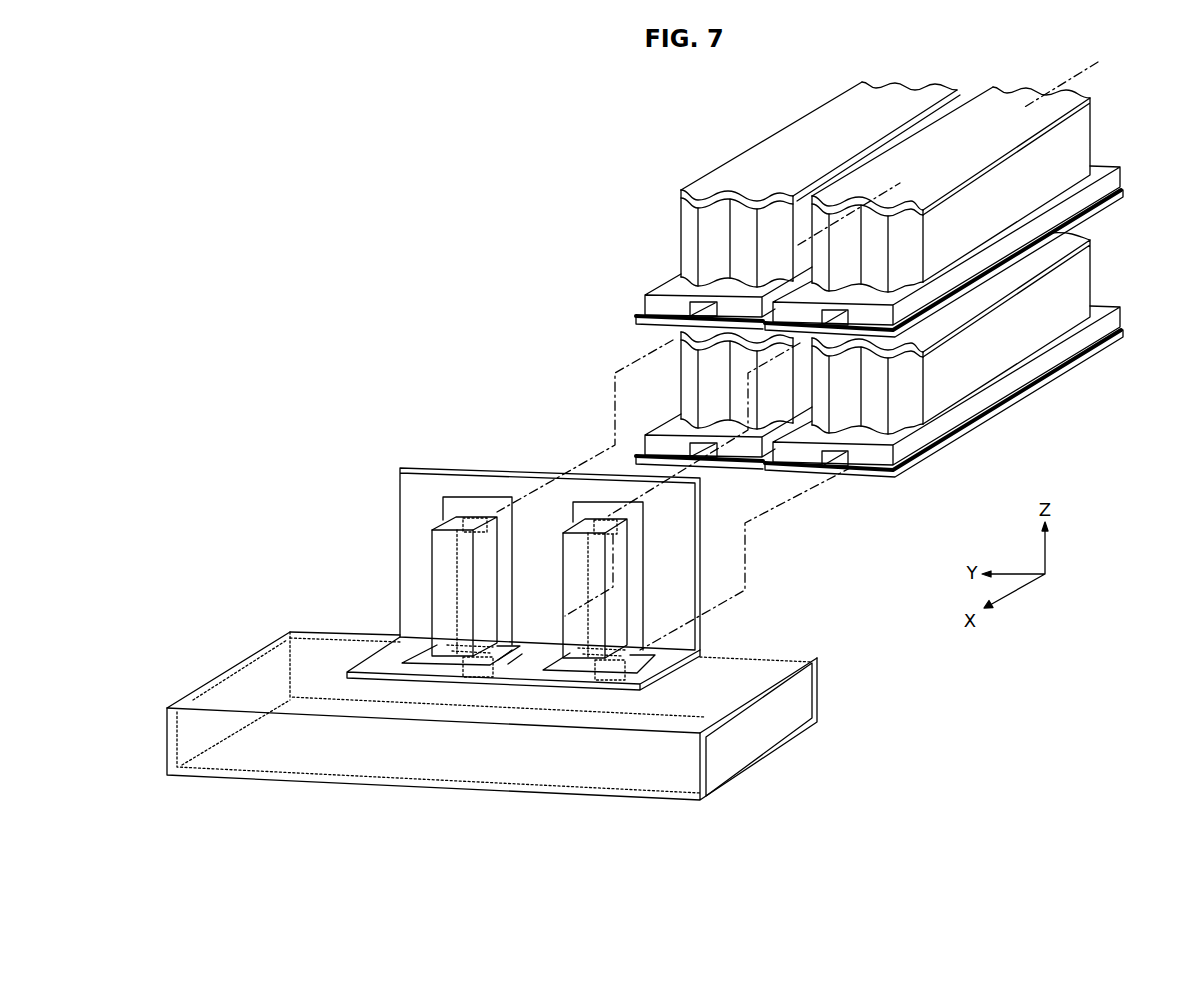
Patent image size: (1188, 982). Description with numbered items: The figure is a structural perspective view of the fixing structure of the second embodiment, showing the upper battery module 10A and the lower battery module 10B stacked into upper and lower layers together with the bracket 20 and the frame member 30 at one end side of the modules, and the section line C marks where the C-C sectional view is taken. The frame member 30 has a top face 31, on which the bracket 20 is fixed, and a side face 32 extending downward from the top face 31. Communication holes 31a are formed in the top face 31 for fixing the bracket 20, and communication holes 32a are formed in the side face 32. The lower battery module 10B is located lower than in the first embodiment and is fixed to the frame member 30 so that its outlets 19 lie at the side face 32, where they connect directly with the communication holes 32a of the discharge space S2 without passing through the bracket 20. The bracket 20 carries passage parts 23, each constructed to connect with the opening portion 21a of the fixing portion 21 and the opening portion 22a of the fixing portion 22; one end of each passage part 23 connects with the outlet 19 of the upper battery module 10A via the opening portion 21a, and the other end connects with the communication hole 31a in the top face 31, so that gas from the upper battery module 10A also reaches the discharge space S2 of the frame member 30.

The upper battery module 10A is at (676, 227).
The lower battery module 10B is at (675, 365).
The outlet 19 is at (690, 306).
The bracket 20 is at (471, 629).
The fixing portion 21 is at (400, 564).
The opening portion 21a is at (462, 517).
The fixing portion 22 is at (451, 728).
The opening portion 22a is at (445, 653).
The passage part 23 is at (540, 583).
The frame member 30 is at (529, 697).
The top face 31 is at (724, 672).
The communication hole 31a is at (457, 653).
The side face 32 is at (820, 692).
The communication hole 32a is at (492, 684).
The section line C is at (949, 150).
The discharge space S2 is at (736, 752).